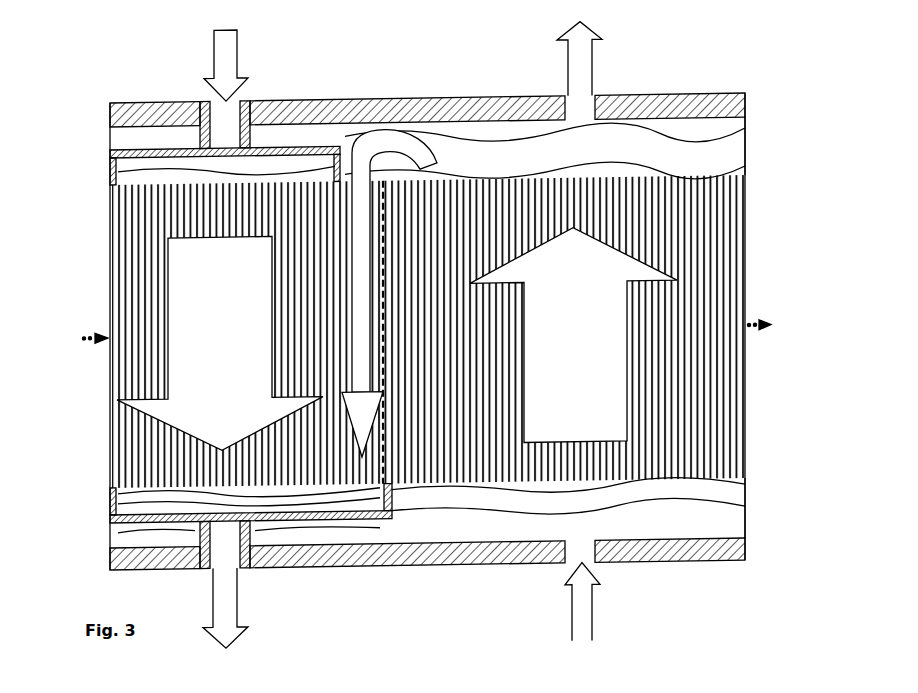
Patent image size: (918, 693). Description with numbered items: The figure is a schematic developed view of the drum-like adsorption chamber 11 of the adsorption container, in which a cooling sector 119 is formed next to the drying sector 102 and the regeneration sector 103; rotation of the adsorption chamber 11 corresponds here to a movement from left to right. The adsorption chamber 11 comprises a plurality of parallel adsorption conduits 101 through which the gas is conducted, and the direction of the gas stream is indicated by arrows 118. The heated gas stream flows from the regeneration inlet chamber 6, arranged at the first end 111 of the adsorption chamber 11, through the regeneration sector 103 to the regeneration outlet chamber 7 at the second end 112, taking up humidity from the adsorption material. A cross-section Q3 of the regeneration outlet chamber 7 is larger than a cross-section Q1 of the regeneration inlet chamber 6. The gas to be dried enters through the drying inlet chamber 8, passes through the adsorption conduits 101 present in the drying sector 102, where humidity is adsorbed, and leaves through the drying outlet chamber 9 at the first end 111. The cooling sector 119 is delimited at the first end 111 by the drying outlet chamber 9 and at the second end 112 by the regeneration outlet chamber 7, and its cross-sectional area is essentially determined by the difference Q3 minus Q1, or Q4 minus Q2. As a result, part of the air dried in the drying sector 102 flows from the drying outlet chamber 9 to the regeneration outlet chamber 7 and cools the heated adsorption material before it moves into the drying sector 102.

The regeneration inlet chamber 6 is at (108, 155).
The regeneration outlet chamber 7 is at (108, 488).
The drying inlet chamber 8 is at (747, 509).
The drying outlet chamber 9 is at (751, 154).
The adsorption chamber 11 is at (745, 215).
The adsorption conduits 101 is at (673, 315).
The drying sector 102 is at (545, 321).
The regeneration sector 103 is at (247, 162).
The first end 111 is at (663, 146).
The second end 112 is at (491, 527).
The arrows 118 is at (226, 345).
The cooling sector 119 is at (378, 128).
The cross-section of the regeneration inlet chamber Q1 is at (265, 158).
The cross-section of the drying inlet chamber Q2 is at (588, 500).
The cross-section of the regeneration outlet chamber Q3 is at (303, 568).
The cross-section of the drying outlet chamber Q4 is at (530, 95).